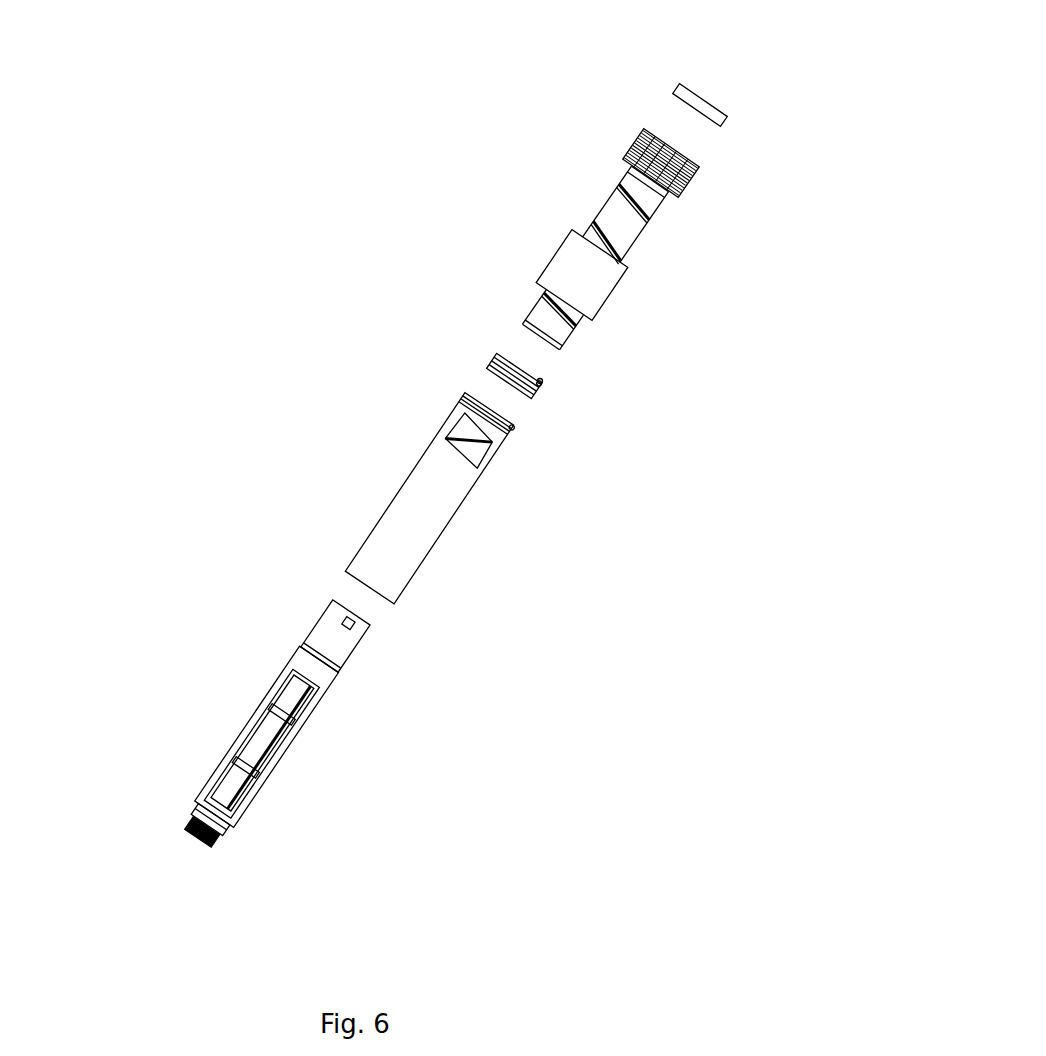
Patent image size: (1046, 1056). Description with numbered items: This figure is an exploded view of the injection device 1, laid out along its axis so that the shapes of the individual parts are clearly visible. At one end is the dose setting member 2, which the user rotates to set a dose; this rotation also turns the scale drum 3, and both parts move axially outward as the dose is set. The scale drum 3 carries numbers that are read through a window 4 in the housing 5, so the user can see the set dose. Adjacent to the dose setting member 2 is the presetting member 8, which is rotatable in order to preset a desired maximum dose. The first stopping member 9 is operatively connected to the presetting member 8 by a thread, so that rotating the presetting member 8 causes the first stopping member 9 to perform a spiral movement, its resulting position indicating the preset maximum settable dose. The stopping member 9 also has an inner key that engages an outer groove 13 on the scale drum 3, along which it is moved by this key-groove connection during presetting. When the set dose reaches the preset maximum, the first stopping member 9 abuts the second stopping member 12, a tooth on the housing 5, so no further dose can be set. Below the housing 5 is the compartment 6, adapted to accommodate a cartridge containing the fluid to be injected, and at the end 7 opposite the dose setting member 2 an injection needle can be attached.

The injection device 1 is at (528, 612).
The dose setting member 2 is at (690, 100).
The scale drum 3 is at (623, 218).
The window 4 is at (472, 430).
The housing 5 is at (402, 538).
The compartment 6 is at (268, 740).
The end 7 is at (202, 848).
The presetting member 8 is at (585, 272).
The first stopping member 9 is at (512, 380).
The second stopping member 12 is at (518, 422).
The outer groove 13 is at (504, 222).